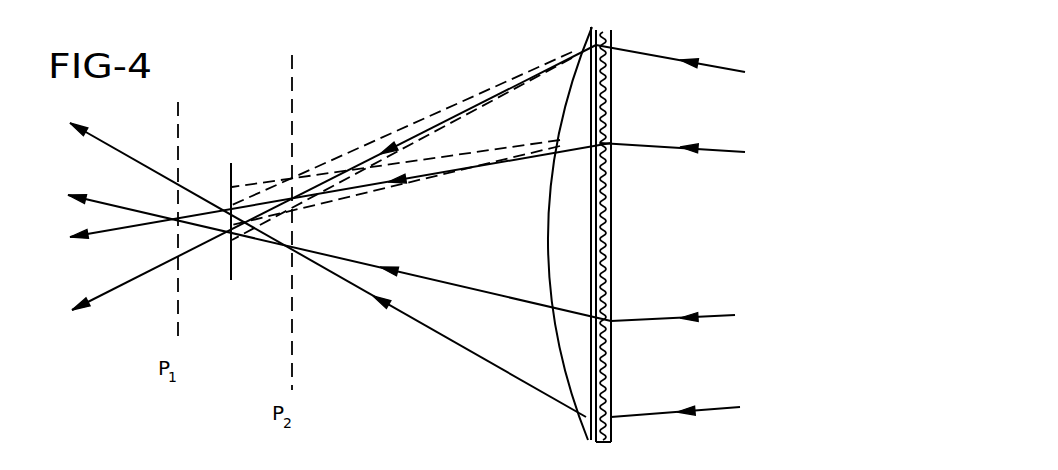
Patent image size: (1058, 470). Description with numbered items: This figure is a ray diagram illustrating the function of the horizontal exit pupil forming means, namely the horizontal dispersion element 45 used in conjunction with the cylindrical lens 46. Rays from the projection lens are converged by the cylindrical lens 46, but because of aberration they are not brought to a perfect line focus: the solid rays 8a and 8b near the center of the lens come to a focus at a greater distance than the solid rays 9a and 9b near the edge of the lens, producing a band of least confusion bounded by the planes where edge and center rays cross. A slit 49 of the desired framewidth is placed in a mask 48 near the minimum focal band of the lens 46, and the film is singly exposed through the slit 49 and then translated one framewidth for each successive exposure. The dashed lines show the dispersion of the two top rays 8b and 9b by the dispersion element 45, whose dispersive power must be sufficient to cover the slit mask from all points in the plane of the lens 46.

The solid ray near the edge of the lens 9a is at (310, 263).
The solid ray near the center of the lens 8a is at (321, 251).
The solid ray near the center of the lens 8b is at (323, 196).
The solid ray near the edge of the lens 9b is at (315, 190).
The mask 48 is at (230, 172).
The slit 49 is at (230, 218).
The cylindrical lens 46 is at (584, 82).
The horizontal dispersion element 45 is at (611, 32).